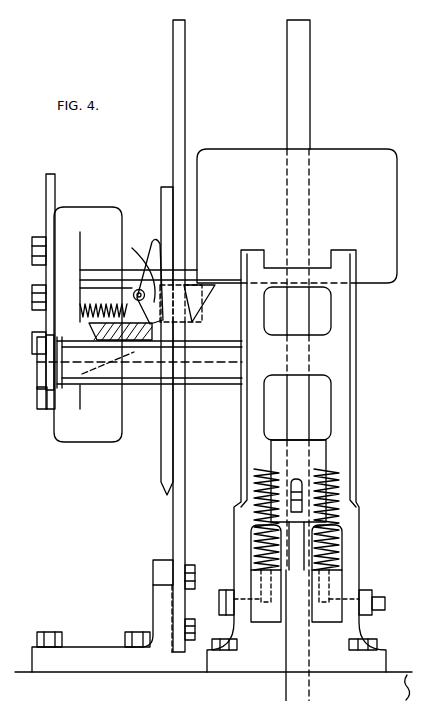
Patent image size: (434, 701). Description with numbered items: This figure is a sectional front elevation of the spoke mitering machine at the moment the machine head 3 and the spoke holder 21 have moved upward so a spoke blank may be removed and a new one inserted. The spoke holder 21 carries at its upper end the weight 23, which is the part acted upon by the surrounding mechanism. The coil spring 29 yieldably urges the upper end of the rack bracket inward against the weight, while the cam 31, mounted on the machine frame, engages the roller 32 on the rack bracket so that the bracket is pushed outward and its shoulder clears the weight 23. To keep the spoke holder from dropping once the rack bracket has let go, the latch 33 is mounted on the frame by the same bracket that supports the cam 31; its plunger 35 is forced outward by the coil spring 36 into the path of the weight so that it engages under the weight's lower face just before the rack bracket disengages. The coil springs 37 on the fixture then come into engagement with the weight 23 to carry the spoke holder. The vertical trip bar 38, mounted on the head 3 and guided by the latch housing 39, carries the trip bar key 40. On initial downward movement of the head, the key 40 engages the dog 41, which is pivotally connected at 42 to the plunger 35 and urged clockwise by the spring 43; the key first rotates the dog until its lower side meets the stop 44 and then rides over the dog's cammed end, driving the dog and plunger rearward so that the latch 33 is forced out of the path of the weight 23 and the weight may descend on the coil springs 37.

The head 3 is at (382, 681).
The spoke holder 21 is at (300, 408).
The weight 23 is at (387, 256).
The coil spring 29 is at (284, 452).
The cam 31 is at (44, 219).
The roller 32 is at (40, 400).
The latch 33 is at (147, 266).
The plunger 35 is at (196, 300).
The coil spring 36 is at (85, 302).
The coil springs 37 is at (255, 548).
The vertical trip bar 38 is at (176, 517).
The latch housing 39 is at (194, 277).
The trip bar key 40 is at (166, 452).
The dog 41 is at (153, 238).
The pivot 42 is at (133, 288).
The spring 43 is at (133, 264).
The stop 44 is at (152, 338).